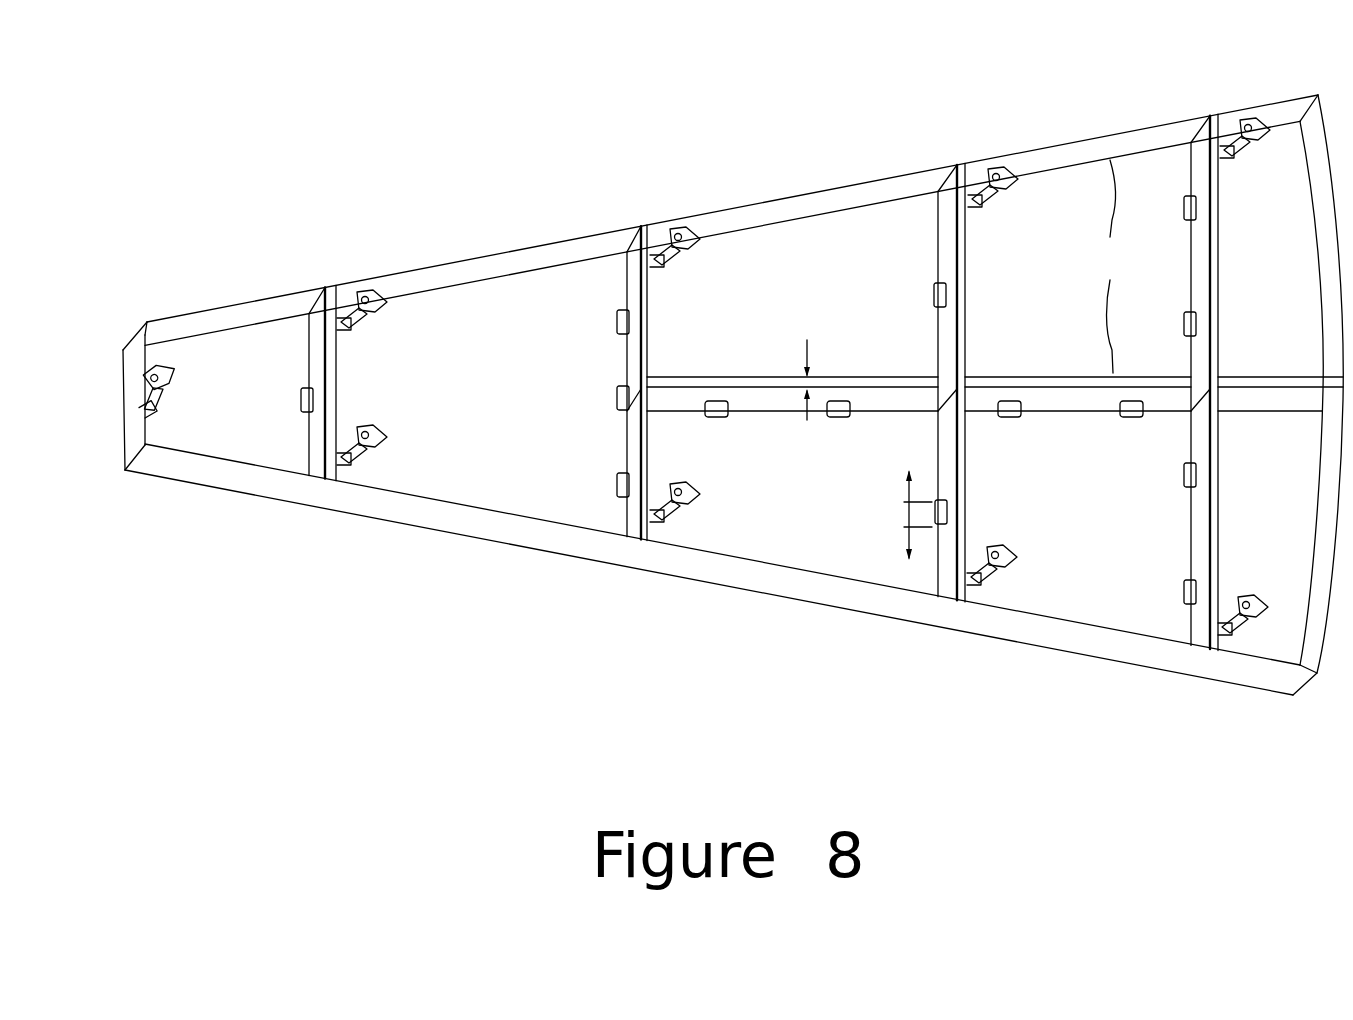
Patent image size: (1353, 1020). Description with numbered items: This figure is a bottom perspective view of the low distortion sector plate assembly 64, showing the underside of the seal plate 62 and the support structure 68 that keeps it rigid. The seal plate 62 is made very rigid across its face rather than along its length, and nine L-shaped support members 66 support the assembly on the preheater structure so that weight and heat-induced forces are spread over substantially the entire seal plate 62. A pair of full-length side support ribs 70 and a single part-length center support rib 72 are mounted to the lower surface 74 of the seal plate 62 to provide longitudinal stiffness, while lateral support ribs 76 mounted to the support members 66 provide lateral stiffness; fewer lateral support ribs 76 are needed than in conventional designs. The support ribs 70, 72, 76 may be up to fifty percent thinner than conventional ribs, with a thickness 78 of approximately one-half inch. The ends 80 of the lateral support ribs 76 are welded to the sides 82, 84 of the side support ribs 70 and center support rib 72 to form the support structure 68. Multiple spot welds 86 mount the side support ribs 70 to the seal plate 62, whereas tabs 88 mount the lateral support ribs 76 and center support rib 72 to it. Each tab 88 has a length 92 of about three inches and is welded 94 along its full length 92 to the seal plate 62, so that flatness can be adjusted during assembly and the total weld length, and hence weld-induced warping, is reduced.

The seal plate 62 is at (783, 532).
The sector plate assembly 64 is at (491, 117).
The L-shaped support member 66 is at (687, 243).
The support structure 68 is at (1193, 273).
The side support rib 70 is at (767, 202).
The center support rib 72 is at (917, 395).
The lower surface 74 is at (510, 398).
The lateral support rib 76 is at (317, 353).
The thickness 78 is at (800, 382).
The end 80 is at (625, 250).
The side 82 is at (852, 200).
The side 84 is at (1070, 403).
The spot weld 86 is at (198, 337).
The tab 88 is at (933, 293).
The length 92 is at (910, 513).
The weld 94 is at (615, 320).